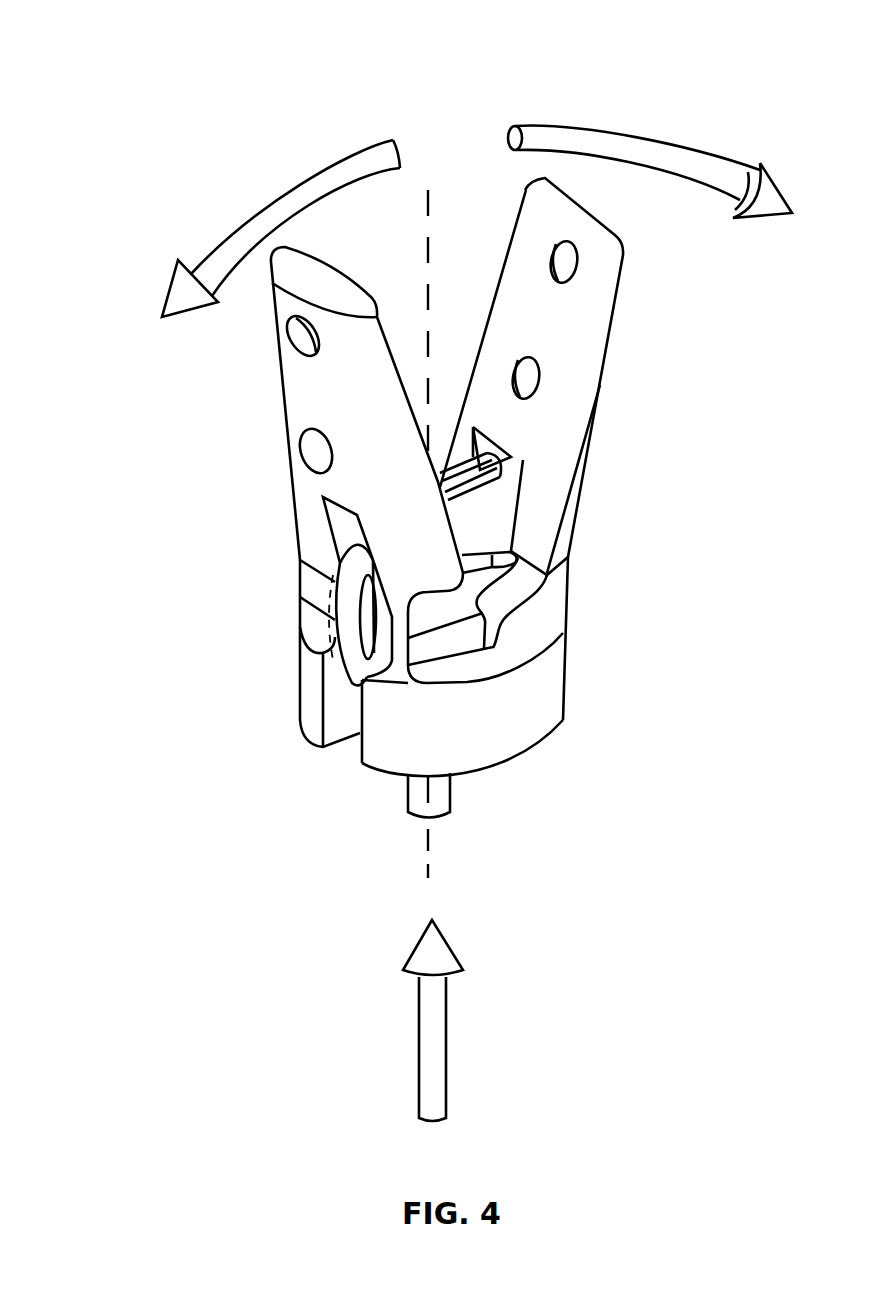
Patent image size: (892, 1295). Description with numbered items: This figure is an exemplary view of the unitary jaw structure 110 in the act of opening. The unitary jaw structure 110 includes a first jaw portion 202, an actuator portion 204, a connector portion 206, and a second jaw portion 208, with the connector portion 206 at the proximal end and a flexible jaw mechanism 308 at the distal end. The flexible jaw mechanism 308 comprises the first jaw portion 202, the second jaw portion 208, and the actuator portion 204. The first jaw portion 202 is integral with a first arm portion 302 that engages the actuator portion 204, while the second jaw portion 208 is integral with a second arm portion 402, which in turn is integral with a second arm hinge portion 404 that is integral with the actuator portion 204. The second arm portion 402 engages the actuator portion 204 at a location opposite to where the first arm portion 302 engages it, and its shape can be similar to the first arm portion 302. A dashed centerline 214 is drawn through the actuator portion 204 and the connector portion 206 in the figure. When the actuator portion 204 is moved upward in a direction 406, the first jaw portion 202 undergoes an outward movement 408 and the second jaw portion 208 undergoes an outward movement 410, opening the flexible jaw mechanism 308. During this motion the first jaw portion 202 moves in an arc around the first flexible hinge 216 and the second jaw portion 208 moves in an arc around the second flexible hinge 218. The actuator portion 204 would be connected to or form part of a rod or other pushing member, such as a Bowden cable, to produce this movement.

The unitary jaw structure 110 is at (350, 55).
The first jaw portion 202 is at (254, 271).
The actuator portion 204 is at (410, 800).
The connector portion 206 is at (570, 641).
The second jaw portion 208 is at (605, 368).
The longitudinal axis 214 is at (428, 230).
The first flexible hinge 216 is at (292, 556).
The second flexible hinge 218 is at (570, 570).
The first arm portion 302 is at (503, 448).
The flexible jaw mechanism 308 is at (228, 400).
The second arm portion 402 is at (520, 467).
The second arm hinge portion 404 is at (303, 618).
The direction 406 is at (418, 1027).
The outward movement 408 is at (178, 268).
The outward movement 410 is at (650, 137).